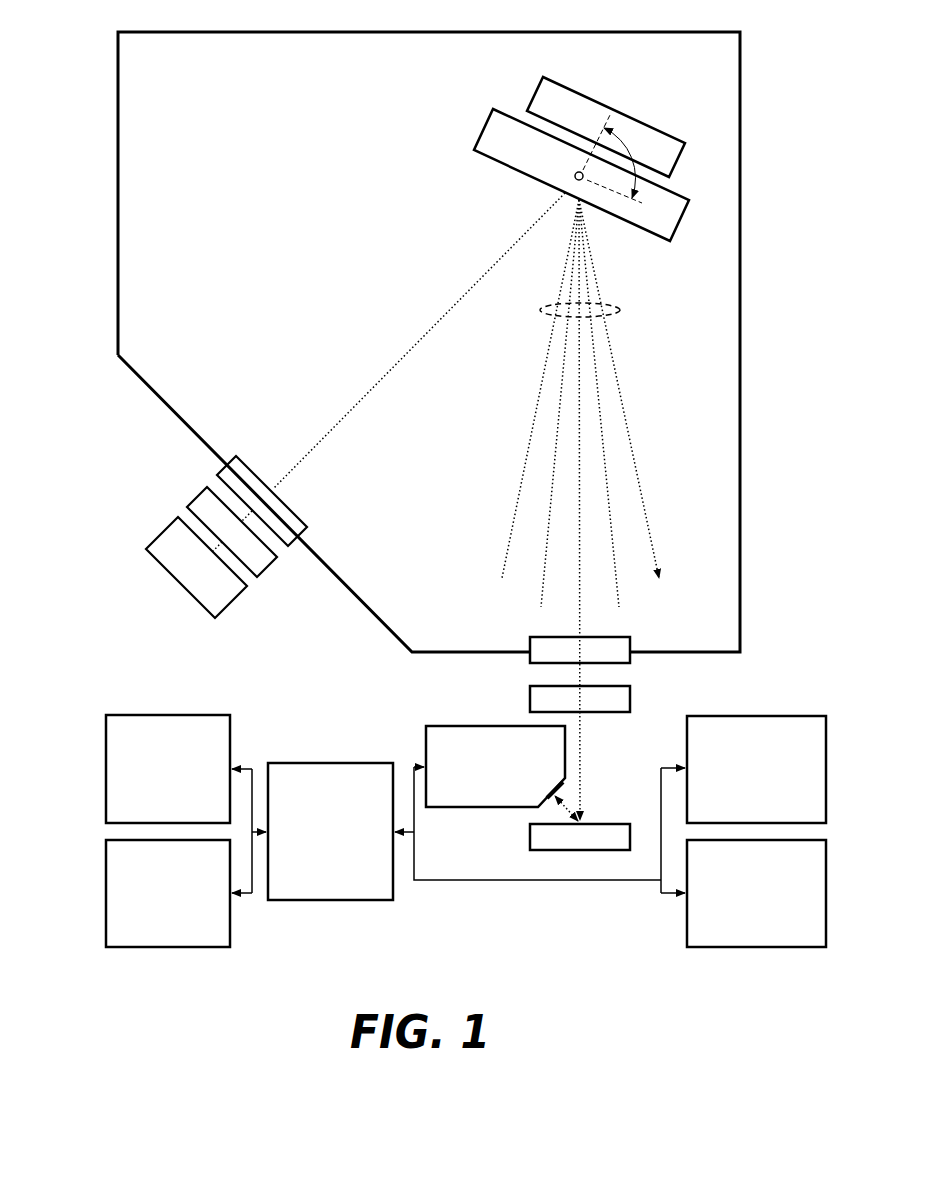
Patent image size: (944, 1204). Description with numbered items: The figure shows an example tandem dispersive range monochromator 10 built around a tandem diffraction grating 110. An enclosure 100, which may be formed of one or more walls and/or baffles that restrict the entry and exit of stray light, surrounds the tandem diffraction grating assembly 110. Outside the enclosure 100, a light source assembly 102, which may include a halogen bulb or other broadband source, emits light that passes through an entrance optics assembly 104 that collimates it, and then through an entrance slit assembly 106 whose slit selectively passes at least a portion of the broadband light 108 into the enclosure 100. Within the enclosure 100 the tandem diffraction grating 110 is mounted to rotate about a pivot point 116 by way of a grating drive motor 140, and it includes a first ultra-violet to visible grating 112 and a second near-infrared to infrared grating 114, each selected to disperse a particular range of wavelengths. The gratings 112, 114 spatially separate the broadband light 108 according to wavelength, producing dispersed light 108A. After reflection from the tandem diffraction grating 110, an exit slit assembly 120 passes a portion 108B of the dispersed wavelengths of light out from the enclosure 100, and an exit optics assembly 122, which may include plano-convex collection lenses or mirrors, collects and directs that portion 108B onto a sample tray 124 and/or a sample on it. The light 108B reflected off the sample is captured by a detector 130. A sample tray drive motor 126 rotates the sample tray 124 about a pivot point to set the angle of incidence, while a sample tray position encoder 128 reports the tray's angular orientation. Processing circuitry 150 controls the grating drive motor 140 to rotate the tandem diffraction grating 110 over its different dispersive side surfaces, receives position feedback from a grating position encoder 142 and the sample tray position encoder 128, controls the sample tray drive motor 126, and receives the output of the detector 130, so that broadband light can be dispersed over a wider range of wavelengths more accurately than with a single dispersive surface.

The tandem dispersive range monochromator 10 is at (87, 46).
The enclosure 100 is at (740, 623).
The light source assembly 102 is at (233, 603).
The entrance optics assembly 104 is at (270, 567).
The entrance slit assembly 106 is at (305, 527).
The broadband light 108 is at (363, 400).
The dispersed light 108A is at (618, 308).
The portion of the dispersed wavelengths of light 108B is at (582, 748).
The tandem diffraction grating 110 is at (487, 94).
The first ultra-violet to visible grating 112 is at (648, 231).
The second near-infrared to infrared grating 114 is at (582, 94).
The pivot point 116 is at (575, 174).
The exit slit assembly 120 is at (630, 660).
The exit optics assembly 122 is at (630, 708).
The sample tray 124 is at (530, 842).
The sample tray drive motor 126 is at (756, 769).
The sample tray position encoder 128 is at (756, 893).
The detector 130 is at (495, 766).
The grating drive motor 140 is at (168, 769).
The grating position encoder 142 is at (168, 893).
The processing circuitry 150 is at (330, 831).